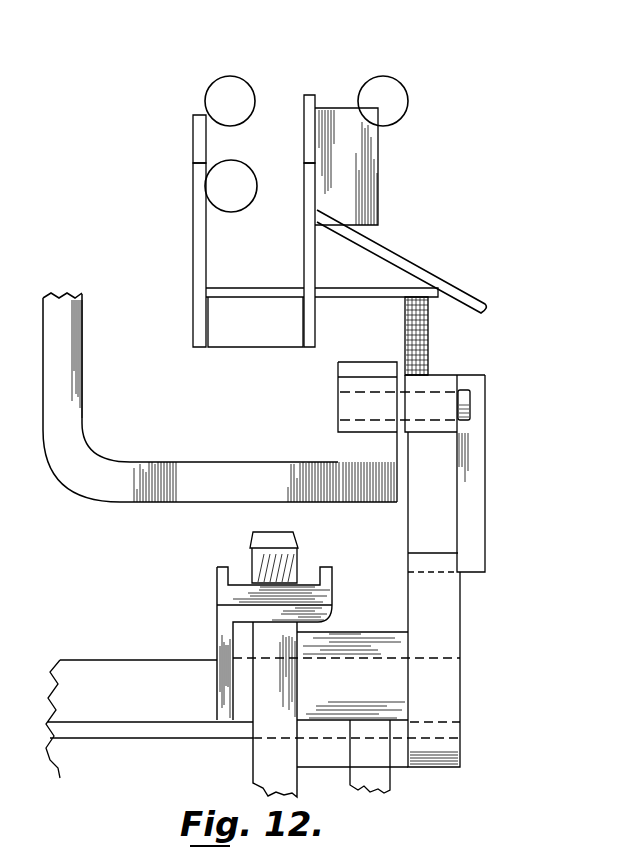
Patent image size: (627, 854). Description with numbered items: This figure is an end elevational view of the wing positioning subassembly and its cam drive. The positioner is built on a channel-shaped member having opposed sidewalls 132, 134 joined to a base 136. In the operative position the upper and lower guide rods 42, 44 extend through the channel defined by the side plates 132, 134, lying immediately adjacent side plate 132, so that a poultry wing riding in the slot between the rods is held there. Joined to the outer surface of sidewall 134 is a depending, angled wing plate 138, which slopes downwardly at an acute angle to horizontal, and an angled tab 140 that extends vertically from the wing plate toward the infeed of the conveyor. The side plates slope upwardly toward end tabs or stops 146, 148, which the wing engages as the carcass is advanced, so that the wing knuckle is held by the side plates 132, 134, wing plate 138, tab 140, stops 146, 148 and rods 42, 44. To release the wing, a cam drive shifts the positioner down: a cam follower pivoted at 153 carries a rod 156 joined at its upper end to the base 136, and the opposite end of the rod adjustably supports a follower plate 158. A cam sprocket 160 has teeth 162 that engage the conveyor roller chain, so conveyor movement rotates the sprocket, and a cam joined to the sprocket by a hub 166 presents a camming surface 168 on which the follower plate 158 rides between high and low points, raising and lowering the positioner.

The guide rail 42 is at (223, 87).
The guide rail 44 is at (242, 175).
The sidewall 132 is at (194, 228).
The sidewall 134 is at (312, 252).
The base 136 is at (260, 297).
The wing plate 138 is at (433, 273).
The angled tab 140 is at (363, 160).
The end tab or stop 146 is at (194, 135).
The end tab or stop 148 is at (303, 95).
The pivot 153 is at (400, 408).
The rod 156 is at (428, 345).
The follower plate 158 is at (472, 513).
The cam sprocket 160 is at (432, 648).
The teeth 162 is at (252, 565).
The hub 166 is at (377, 700).
The camming surface 168 is at (440, 605).